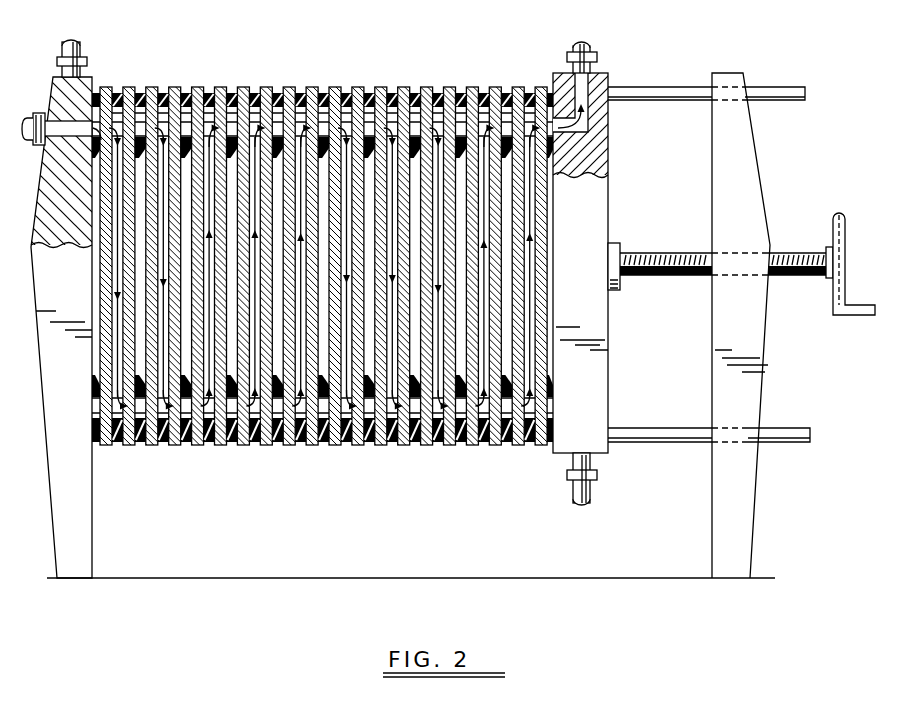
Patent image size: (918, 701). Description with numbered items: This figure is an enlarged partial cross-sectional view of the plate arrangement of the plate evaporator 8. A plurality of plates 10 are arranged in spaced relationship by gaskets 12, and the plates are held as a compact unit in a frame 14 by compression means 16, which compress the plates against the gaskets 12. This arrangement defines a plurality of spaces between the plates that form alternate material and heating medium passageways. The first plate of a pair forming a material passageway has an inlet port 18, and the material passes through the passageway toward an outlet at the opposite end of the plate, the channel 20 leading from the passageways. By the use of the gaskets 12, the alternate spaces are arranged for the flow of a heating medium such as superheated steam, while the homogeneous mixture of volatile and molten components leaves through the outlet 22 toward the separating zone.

The filter press plate pack 8 is at (322, 266).
The plates 10 is at (220, 88).
The gaskets 12 is at (250, 447).
The frame 14 is at (602, 413).
The compression means 16 is at (800, 276).
The inlet port 18 is at (96, 132).
The outlet channel 20 is at (118, 423).
The outlet 22 is at (590, 45).